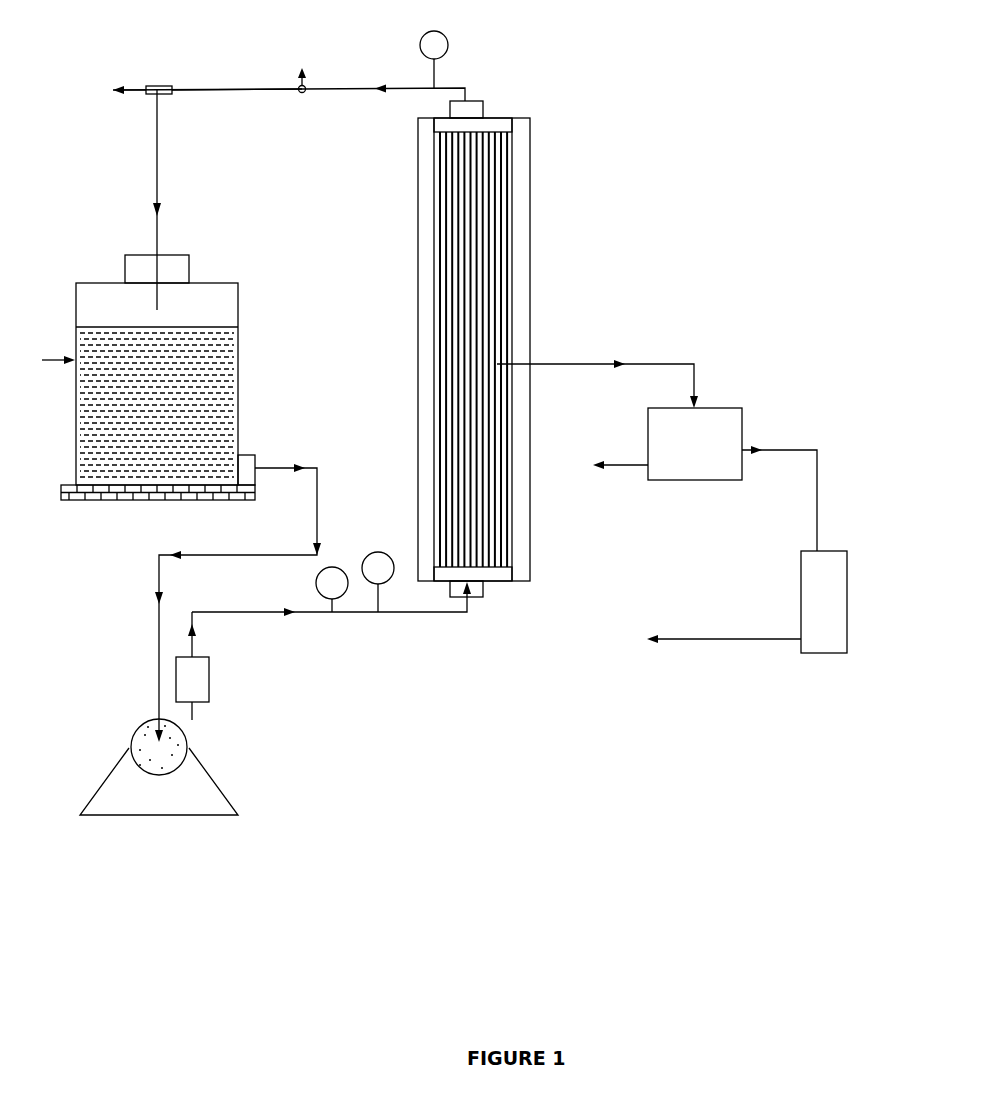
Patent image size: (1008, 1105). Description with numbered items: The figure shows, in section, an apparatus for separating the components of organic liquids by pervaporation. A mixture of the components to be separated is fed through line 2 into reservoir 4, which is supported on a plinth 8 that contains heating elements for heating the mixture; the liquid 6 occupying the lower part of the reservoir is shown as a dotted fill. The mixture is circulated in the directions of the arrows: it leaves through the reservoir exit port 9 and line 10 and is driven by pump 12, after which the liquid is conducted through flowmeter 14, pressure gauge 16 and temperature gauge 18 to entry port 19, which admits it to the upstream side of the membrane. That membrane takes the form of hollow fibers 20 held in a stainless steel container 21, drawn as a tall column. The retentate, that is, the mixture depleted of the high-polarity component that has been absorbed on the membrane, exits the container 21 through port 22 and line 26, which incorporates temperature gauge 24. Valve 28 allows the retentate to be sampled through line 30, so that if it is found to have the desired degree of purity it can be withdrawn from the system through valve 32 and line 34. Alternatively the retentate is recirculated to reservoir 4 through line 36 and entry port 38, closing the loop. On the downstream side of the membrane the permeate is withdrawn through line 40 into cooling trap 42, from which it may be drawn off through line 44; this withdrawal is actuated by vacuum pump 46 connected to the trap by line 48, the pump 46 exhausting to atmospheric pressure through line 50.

The line 2 is at (57, 367).
The reservoir 4 is at (74, 320).
The liquid in reservoir 6 is at (224, 420).
The plinth 8 is at (52, 492).
The reservoir exit port 9 is at (262, 466).
The line 10 is at (238, 636).
The pump 12 is at (128, 726).
The flowmeter 14 is at (215, 681).
The pressure gauge 16 is at (317, 578).
The temperature gauge 18 is at (395, 578).
The entry port 19 is at (480, 590).
The hollow fibers 20 is at (505, 273).
The stainless steel container 21 is at (537, 348).
The port 22 is at (478, 98).
The temperature gauge 24 is at (440, 28).
The line 26 is at (357, 89).
The valve 28 is at (290, 84).
The line 30 is at (310, 73).
The valve 32 is at (197, 71).
The line 34 is at (130, 95).
The line 36 is at (173, 200).
The entry port 38 is at (202, 268).
The line 40 is at (614, 375).
The cooling trap 42 is at (749, 434).
The line 44 is at (640, 458).
The vacuum pump 46 is at (858, 621).
The line 48 is at (827, 523).
The line 50 is at (753, 654).